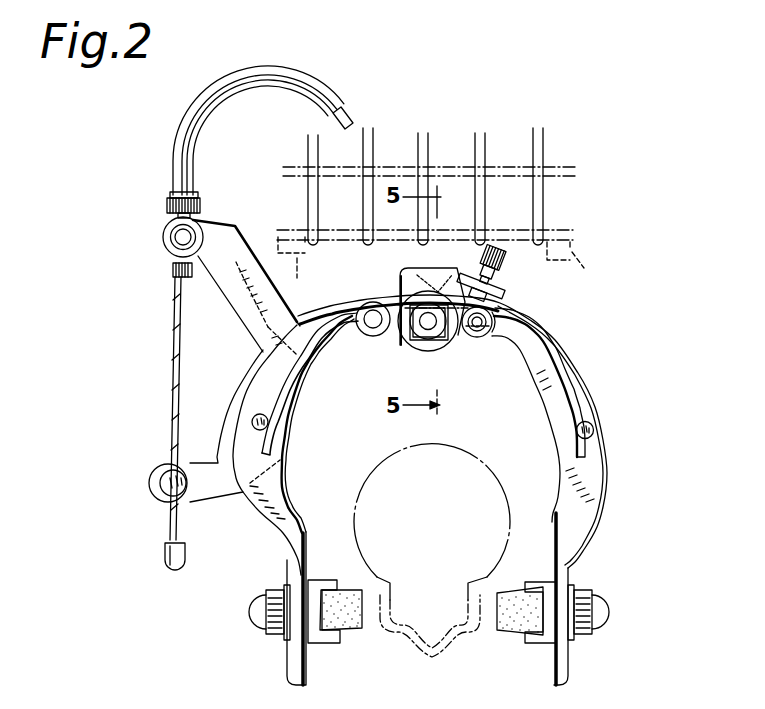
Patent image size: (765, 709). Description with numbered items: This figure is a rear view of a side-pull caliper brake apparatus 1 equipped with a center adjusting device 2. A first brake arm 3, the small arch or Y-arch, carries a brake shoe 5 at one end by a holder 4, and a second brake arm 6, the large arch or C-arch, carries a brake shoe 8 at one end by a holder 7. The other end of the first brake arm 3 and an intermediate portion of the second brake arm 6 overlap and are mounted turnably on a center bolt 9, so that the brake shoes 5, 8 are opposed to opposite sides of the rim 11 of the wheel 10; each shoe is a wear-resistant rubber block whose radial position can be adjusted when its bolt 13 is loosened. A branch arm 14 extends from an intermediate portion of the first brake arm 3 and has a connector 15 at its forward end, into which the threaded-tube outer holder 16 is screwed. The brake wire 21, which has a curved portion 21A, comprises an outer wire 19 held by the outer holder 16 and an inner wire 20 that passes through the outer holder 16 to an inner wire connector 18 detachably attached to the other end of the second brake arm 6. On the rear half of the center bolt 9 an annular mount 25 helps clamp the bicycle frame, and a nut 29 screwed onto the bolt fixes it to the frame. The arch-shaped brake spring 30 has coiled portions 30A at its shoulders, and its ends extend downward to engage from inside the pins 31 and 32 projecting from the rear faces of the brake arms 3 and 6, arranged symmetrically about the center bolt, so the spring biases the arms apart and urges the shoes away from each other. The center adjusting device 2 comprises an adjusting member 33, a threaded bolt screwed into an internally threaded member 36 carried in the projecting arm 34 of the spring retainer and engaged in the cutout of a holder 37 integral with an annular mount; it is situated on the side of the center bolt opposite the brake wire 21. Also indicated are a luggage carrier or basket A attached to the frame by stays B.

The caliper brake apparatus 1 is at (606, 363).
The center adjusting device 2 is at (522, 297).
The first brake arm 3 is at (284, 484).
The holder 4 is at (318, 645).
The brake shoe 5 is at (352, 632).
The second brake arm 6 is at (590, 522).
The holder 7 is at (540, 647).
The brake shoe 8 is at (505, 636).
The center bolt 9 is at (434, 338).
The wheel 10 is at (487, 464).
The rim 11 is at (446, 657).
The bolt 13 is at (270, 640).
The branch arm 14 is at (242, 306).
The connector 15 is at (176, 240).
The outer holder 16 is at (166, 208).
The inner wire connector 18 is at (160, 483).
The outer wire 19 is at (200, 179).
The inner wire 20 is at (173, 381).
The brake wire 21 is at (166, 159).
The curved portion 21A is at (233, 78).
The annular mount 25 is at (406, 346).
The nut 29 is at (406, 286).
The brake spring 30 is at (312, 352).
The coiled portions 30A is at (365, 303).
The pin 31 is at (252, 420).
The pin 32 is at (594, 435).
The adjusting member 33 is at (503, 246).
The projecting arm 34 is at (467, 338).
The internally threaded member 36 is at (498, 330).
The holder 37 is at (507, 289).
The luggage carrier, basket or the like A is at (548, 152).
The stays B is at (436, 271).